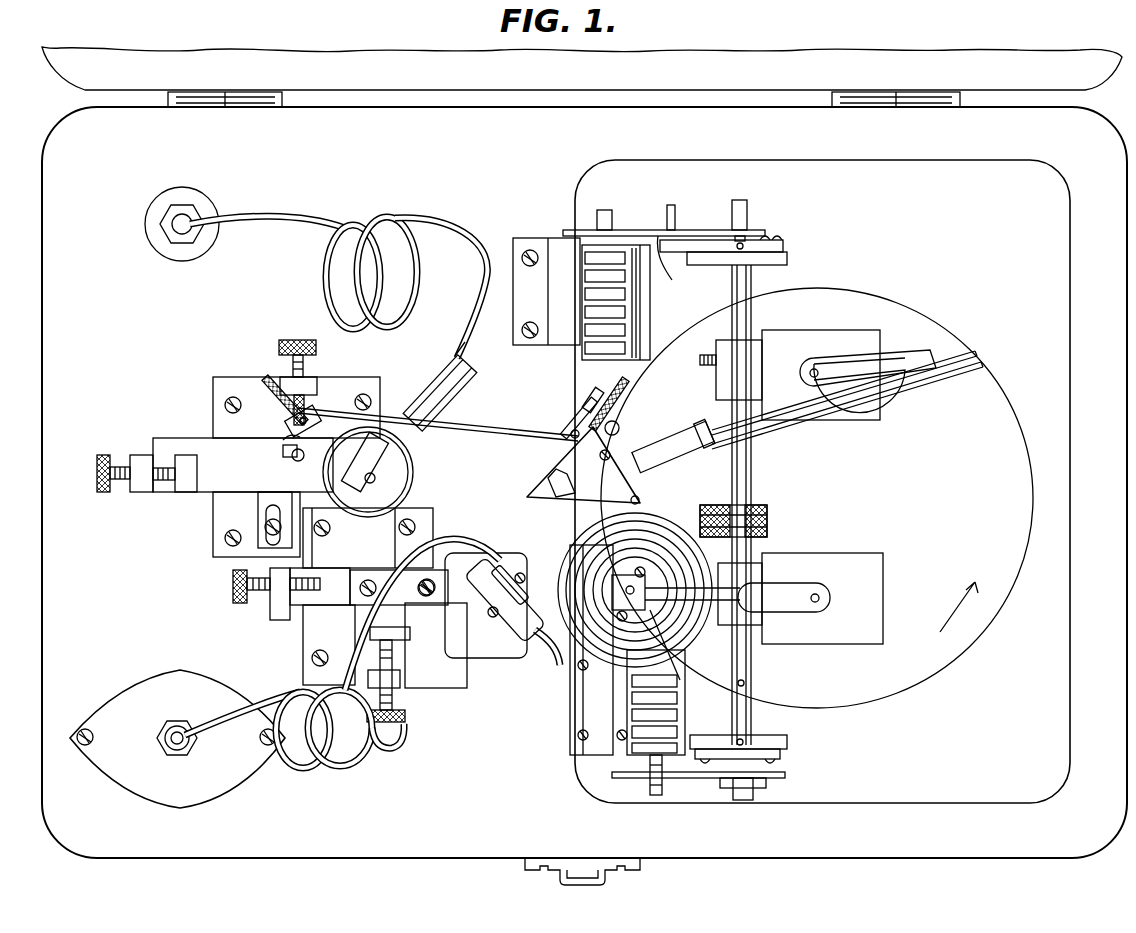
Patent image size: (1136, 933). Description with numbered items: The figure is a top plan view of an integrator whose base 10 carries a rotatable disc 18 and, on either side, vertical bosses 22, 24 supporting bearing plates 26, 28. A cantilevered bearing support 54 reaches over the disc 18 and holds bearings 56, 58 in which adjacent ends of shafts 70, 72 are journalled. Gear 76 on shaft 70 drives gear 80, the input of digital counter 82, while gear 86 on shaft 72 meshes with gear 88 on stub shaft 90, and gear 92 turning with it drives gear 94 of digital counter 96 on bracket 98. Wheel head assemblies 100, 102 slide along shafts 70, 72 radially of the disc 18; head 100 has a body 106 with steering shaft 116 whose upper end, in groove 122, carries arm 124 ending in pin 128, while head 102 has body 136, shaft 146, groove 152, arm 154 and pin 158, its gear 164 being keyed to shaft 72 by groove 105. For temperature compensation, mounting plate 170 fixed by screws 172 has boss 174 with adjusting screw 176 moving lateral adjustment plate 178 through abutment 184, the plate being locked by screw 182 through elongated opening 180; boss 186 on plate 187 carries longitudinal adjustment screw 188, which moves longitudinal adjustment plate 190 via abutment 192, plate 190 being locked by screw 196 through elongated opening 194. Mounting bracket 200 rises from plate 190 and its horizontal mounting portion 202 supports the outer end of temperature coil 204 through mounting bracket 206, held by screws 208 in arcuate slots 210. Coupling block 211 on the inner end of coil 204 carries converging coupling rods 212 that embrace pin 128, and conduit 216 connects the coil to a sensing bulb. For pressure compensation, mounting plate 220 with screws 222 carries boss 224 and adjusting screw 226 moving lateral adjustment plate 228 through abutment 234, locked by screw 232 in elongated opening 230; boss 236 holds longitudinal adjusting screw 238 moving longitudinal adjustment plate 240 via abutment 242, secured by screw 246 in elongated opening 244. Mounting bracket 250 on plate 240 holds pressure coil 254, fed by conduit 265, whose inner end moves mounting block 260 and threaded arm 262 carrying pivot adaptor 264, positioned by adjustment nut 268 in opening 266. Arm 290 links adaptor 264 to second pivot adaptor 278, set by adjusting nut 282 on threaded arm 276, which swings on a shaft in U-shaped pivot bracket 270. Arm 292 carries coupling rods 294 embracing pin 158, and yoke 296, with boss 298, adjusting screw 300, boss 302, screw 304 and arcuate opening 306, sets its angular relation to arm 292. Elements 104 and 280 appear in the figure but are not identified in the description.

The base 10 is at (992, 231).
The disc 18 is at (975, 645).
The vertical boss 22 is at (788, 748).
The vertical boss 24 is at (790, 259).
The bearing plate 26 is at (788, 757).
The bearing plate 28 is at (786, 241).
The cantilevered bearing support 54 is at (712, 478).
The bearing 56 is at (766, 538).
The bearing 58 is at (754, 505).
The shaft 70 is at (753, 663).
The shaft 72 is at (753, 465).
The gear 76 is at (770, 779).
The gear 80 is at (605, 785).
The digital counter 82 is at (620, 752).
The gear 86 is at (706, 226).
The gear 88 is at (626, 224).
The stub shaft 90 is at (671, 205).
The gear 92 is at (672, 268).
The gear 94 is at (566, 230).
The digital counter 96 is at (586, 335).
The bracket 98 is at (553, 248).
The sliding wheel head assembly 100 is at (829, 547).
The sliding wheel head assembly 102 is at (837, 420).
The shaft pin 104 is at (745, 683).
The groove 105 is at (714, 461).
The body member 106 is at (885, 582).
The shaft 116 is at (822, 600).
The groove 122 is at (777, 608).
The arm 124 is at (770, 594).
The pin 128 is at (688, 645).
The body member 136 is at (795, 340).
The shaft 146 is at (800, 373).
The groove 152 is at (880, 372).
The arm 154 is at (834, 372).
The pin 158 is at (928, 384).
The gear 164 is at (700, 360).
The mounting plate 170 is at (300, 647).
The screws 172 is at (458, 700).
The boss 174 is at (400, 679).
The adjusting screw 176 is at (398, 722).
The lateral adjustment plate 178 is at (327, 645).
The elongated opening 180 is at (400, 560).
The screw 182 is at (400, 545).
The abutment 184 is at (302, 668).
The boss 186 is at (276, 598).
The plate 187 is at (268, 620).
The longitudinal adjustment screw 188 is at (232, 583).
The longitudinal adjustment plate 190 is at (341, 616).
The abutment 192 is at (313, 570).
The elongated opening 194 is at (395, 640).
The screw 196 is at (393, 655).
The mounting bracket 200 is at (503, 660).
The mounting portion 202 is at (484, 520).
The temperature coil 204 is at (555, 642).
The mounting bracket 206 is at (506, 622).
The screws 208 is at (498, 556).
The arcuate slots 210 is at (500, 584).
The coupling block 211 is at (680, 682).
The coupling rods 212 is at (740, 594).
The conduit 216 is at (318, 768).
The mounting plate 220 is at (224, 367).
The screws 222 is at (226, 398).
The boss 224 is at (310, 378).
The adjusting screw 226 is at (280, 342).
The lateral adjustment plate 228 is at (142, 455).
The elongated opening 230 is at (264, 512).
The screw 232 is at (264, 527).
The abutment 234 is at (280, 442).
The boss 236 is at (132, 460).
The longitudinal adjusting screw 238 is at (102, 494).
The longitudinal adjustment plate 240 is at (190, 430).
The abutment 242 is at (183, 485).
The elongated opening 244 is at (282, 452).
The screw 246 is at (292, 460).
The mounting bracket 250 is at (448, 443).
The pressure coil 254 is at (448, 468).
The mounting block 260 is at (445, 378).
The threaded arm 262 is at (270, 372).
The pivot adaptor 264 is at (345, 395).
The conduit 265 is at (277, 212).
The opening 266 is at (318, 400).
The adjustment nut 268 is at (287, 426).
The U-shaped pivot bracket 270 is at (528, 495).
The threaded arm 276 is at (598, 398).
The pivot adaptor 278 is at (572, 410).
The pivot pin 280 is at (571, 445).
The adjusting nut 282 is at (570, 424).
The arm 290 is at (478, 425).
The arm 292 is at (637, 422).
The coupling rods 294 is at (770, 430).
The yoke 296 is at (598, 510).
The boss 298 is at (629, 404).
The adjusting screw 300 is at (592, 410).
The boss 302 is at (632, 470).
The screw 304 is at (592, 463).
The arcuate opening 306 is at (673, 445).